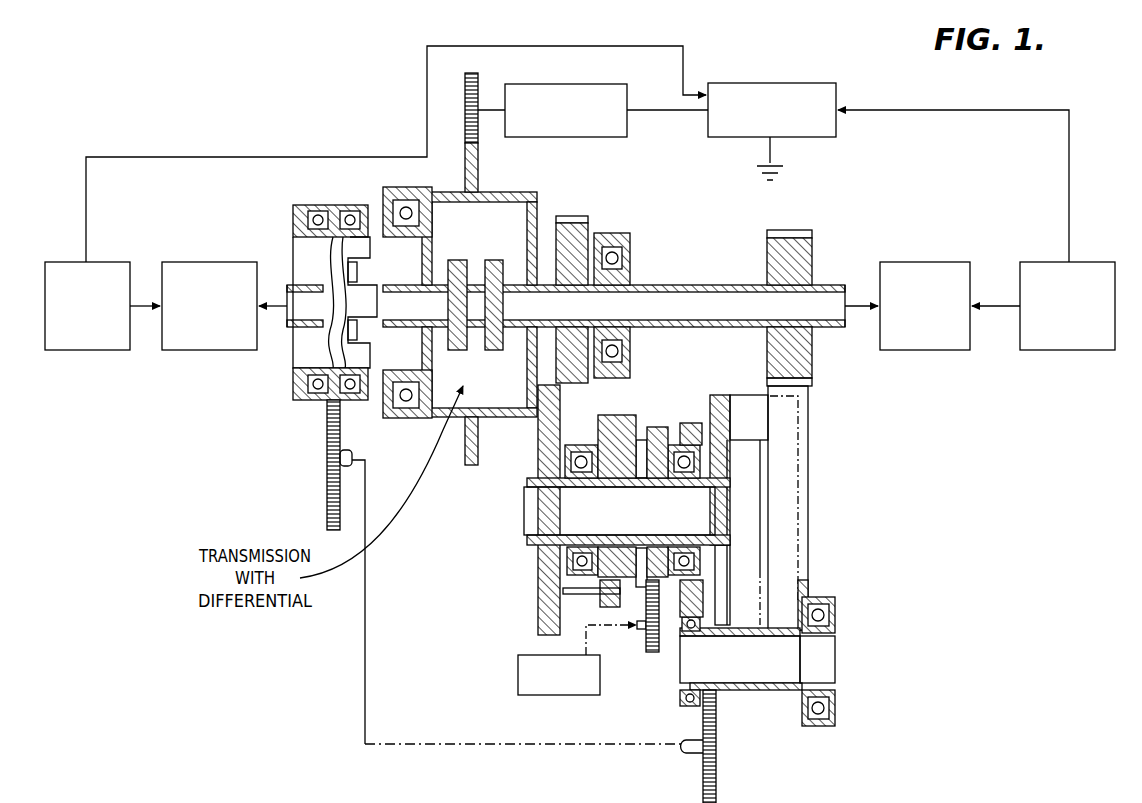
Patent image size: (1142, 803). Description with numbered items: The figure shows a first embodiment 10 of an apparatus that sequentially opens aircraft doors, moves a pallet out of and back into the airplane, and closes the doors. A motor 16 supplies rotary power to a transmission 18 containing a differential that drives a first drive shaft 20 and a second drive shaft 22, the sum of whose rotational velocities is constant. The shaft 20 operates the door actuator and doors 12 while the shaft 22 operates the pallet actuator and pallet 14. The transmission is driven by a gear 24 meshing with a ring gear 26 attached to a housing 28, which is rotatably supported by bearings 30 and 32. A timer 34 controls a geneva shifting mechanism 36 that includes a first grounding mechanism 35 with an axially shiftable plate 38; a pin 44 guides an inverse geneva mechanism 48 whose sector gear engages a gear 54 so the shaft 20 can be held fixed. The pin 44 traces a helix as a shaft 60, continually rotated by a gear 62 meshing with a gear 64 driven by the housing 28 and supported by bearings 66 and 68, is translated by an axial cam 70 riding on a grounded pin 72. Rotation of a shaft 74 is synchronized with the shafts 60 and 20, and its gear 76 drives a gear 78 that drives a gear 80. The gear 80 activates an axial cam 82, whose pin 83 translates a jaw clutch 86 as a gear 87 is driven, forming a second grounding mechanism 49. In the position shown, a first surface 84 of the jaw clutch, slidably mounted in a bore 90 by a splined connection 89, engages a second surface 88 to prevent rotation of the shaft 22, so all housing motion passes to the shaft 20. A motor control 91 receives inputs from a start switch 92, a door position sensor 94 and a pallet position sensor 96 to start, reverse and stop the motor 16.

The first embodiment 10 is at (360, 128).
The door actuator and doors 12 is at (913, 262).
The pallet actuator and pallet 14 is at (213, 262).
The motor 16 is at (597, 137).
The transmission 18 is at (503, 176).
The first drive shaft 20 is at (828, 285).
The second drive shaft 22 is at (298, 318).
The gear 24 is at (465, 110).
The ring gear 26 is at (465, 170).
The housing 28 is at (520, 192).
The bearing 30 is at (400, 418).
The bearing 32 is at (618, 233).
The timer 34 is at (518, 683).
The first grounding mechanism 35 is at (714, 372).
The geneva shifting mechanism 36 is at (502, 549).
The axially shiftable plate 38 is at (730, 568).
The pin 44 is at (735, 395).
The inverse geneva mechanism 48 is at (808, 430).
The second grounding mechanism 49 is at (276, 206).
The gear 54 is at (808, 250).
The shaft 60 is at (524, 498).
The gear 62 is at (540, 444).
The gear 64 is at (575, 217).
The bearing 66 is at (577, 445).
The bearing 68 is at (690, 440).
The axial cam 70 is at (647, 440).
The pin 72 is at (620, 440).
The shaft 74 is at (680, 670).
The gear 76 is at (716, 692).
The gear 78 is at (716, 772).
The gear 80 is at (327, 456).
The axial cam 82 is at (342, 212).
The pin 83 is at (342, 400).
The first surface of jaw clutch 84 is at (340, 330).
The jaw clutch 86 is at (388, 272).
The gear 87 is at (320, 400).
The second surface of jaw clutch 88 is at (372, 320).
The splined connection 89 is at (295, 378).
The bore 90 is at (297, 252).
The motor control 91 is at (808, 83).
The start switch 92 is at (760, 173).
The door position sensor 94 is at (1098, 262).
The pallet position sensor 96 is at (72, 262).